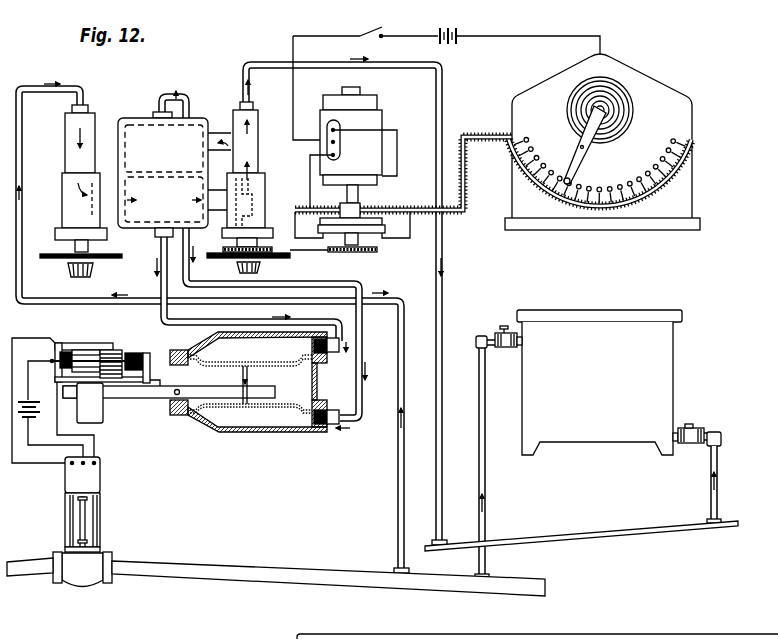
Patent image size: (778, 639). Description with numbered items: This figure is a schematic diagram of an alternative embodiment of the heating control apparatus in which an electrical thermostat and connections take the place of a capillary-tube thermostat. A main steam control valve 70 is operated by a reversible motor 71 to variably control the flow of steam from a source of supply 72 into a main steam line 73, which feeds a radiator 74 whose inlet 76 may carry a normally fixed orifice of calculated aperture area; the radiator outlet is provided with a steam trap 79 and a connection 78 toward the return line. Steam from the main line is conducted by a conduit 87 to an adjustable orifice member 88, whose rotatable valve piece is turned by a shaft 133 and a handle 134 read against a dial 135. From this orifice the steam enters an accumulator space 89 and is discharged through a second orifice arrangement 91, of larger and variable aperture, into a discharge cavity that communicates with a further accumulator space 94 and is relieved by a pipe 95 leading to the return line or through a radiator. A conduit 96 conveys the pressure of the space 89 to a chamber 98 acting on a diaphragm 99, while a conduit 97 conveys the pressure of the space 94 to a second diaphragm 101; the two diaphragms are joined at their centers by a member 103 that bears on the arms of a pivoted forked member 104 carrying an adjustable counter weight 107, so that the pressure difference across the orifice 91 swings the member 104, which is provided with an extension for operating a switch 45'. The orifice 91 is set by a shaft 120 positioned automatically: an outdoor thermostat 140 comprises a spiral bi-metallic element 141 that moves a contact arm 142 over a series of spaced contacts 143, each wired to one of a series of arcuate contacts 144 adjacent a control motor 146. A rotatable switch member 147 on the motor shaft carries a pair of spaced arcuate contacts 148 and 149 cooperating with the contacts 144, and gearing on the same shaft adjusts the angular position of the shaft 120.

The solenoid magnet 45' is at (100, 349).
The main steam control valve 70 is at (84, 581).
The reversible motor 71 is at (96, 481).
The source of supply 72 is at (33, 562).
The main steam line 73 is at (163, 567).
The radiator 74 is at (607, 433).
The radiator inlet 76 is at (506, 333).
The connection 78 is at (612, 535).
The steam trap 79 is at (697, 428).
The conduit 87 is at (25, 281).
The orifice member 88 is at (91, 200).
The accumulator space 89 is at (174, 174).
The orifice arrangement 91 is at (246, 190).
The accumulator space 94 is at (183, 144).
The pipe 95 is at (262, 62).
The conduit 96 is at (167, 321).
The conduit 97 is at (188, 97).
The chamber 98 is at (300, 358).
The diaphragm 99 is at (227, 374).
The diaphragm 101 is at (222, 428).
The diaphragm connecting member 103 is at (249, 373).
The forked member 104 is at (163, 399).
The adjustable counter weight 107 is at (103, 411).
The shaft 120 is at (238, 262).
The shaft 133 is at (78, 251).
The handle 134 is at (94, 270).
The dial 135 is at (155, 234).
The thermostat 140 is at (654, 88).
The spiral bi-metallic thermostat element 141 is at (611, 87).
The contact arm 142 is at (579, 161).
The contacts 143 is at (578, 185).
The contacts 144 is at (296, 207).
The control motor 146 is at (373, 117).
The rotatable switch member 147 is at (385, 221).
The arcuate contact 148 is at (336, 253).
The arcuate contact 149 is at (371, 234).